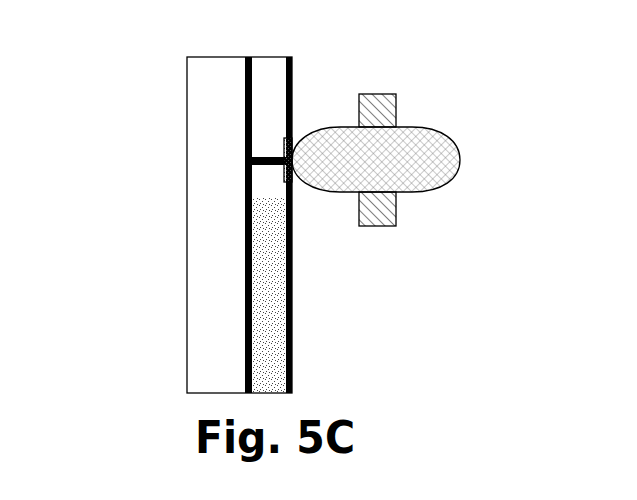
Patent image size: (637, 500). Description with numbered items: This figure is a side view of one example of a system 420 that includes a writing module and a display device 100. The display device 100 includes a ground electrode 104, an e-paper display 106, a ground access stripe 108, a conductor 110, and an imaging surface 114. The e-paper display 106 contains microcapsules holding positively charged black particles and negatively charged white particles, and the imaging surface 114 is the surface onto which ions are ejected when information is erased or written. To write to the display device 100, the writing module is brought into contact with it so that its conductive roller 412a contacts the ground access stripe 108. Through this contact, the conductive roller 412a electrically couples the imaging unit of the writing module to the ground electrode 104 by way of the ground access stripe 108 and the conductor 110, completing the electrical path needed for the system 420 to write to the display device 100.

The display device 100 is at (185, 278).
The ground electrode 104 is at (248, 57).
The e-paper display 106 is at (293, 338).
The ground access stripe 108 is at (287, 208).
The conductor 110 is at (258, 157).
The imaging surface 114 is at (293, 292).
The conductive roller 412a is at (460, 147).
The system 420 is at (427, 116).